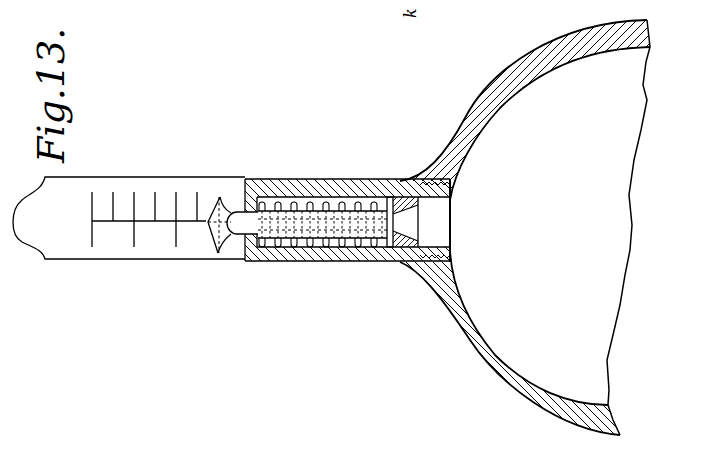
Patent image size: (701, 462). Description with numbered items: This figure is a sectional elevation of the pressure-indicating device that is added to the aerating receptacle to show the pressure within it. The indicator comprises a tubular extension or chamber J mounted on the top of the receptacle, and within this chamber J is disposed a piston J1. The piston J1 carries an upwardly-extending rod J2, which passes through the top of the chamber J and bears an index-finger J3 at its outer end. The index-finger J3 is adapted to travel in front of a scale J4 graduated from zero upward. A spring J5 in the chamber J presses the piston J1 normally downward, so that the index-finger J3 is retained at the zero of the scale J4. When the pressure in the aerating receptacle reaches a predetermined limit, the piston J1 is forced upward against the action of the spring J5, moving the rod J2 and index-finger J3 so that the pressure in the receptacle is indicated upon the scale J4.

The tubular extension or chamber J is at (354, 190).
The piston J1 is at (396, 253).
The upwardly-extending rod J2 is at (315, 232).
The index-finger J3 is at (213, 233).
The scale J4 is at (145, 191).
The spring J5 is at (284, 205).